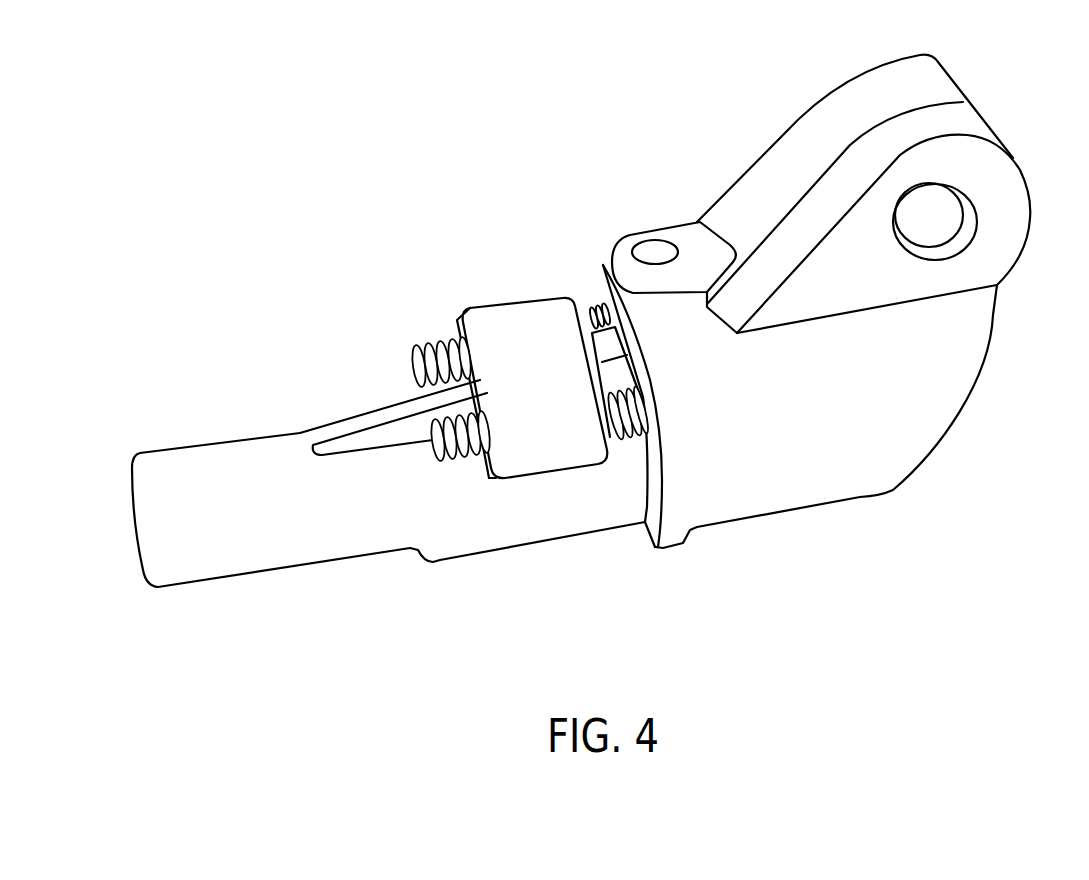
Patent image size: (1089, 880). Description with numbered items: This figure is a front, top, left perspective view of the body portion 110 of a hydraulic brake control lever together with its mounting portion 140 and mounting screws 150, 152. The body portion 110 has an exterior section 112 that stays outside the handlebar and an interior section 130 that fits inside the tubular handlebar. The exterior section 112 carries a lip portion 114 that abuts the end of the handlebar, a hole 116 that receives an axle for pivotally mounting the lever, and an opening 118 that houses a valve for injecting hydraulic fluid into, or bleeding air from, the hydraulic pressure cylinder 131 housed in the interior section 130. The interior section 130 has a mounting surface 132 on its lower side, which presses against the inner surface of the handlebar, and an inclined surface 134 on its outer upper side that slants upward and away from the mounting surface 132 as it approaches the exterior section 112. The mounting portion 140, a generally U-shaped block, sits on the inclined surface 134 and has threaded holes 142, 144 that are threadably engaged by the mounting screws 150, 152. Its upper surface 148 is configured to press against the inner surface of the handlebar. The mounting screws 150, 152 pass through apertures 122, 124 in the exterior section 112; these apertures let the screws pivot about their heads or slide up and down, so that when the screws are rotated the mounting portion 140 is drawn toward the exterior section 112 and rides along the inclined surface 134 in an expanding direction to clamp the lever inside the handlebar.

The body portion 110 is at (837, 337).
The exterior section 112 is at (886, 492).
The lip portion 114 is at (647, 543).
The hole 116 is at (973, 205).
The opening 118 is at (658, 238).
The aperture 122 is at (637, 447).
The aperture 124 is at (595, 313).
The interior section 130 is at (388, 489).
The hydraulic pressure cylinder 131 is at (273, 573).
The mounting surface 132 is at (527, 550).
The inclined surface 134 is at (400, 397).
The mounting portion 140 is at (533, 372).
The threaded hole 142 is at (487, 470).
The threaded hole 144 is at (457, 320).
The upper surface 148 is at (527, 337).
The mounting screw 150 is at (437, 417).
The mounting screw 152 is at (430, 343).